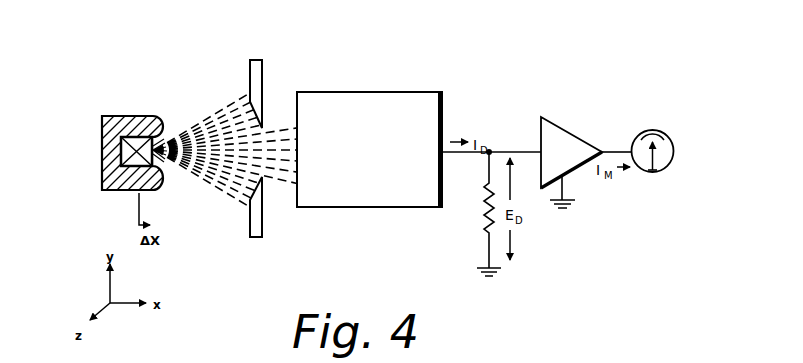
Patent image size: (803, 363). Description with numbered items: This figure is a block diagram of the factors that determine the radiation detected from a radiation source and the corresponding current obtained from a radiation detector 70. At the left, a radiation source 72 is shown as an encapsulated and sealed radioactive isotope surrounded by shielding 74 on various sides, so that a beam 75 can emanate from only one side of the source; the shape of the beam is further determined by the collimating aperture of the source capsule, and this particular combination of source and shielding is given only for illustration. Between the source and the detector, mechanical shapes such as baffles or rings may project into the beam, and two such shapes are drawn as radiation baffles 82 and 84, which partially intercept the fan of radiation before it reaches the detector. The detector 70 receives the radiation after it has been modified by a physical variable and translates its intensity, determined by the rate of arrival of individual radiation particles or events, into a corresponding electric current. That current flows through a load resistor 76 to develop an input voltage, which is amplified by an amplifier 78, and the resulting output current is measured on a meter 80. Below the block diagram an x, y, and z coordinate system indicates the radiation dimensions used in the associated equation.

The radiation detector 70 is at (380, 92).
The radiation source 72 is at (131, 137).
The shielding 74 is at (103, 160).
The beam 75 is at (205, 114).
The load resistor 76 is at (487, 234).
The amplifier 78 is at (568, 132).
The meter 80 is at (654, 172).
The radiation baffle 82 is at (262, 68).
The radiation baffle 84 is at (262, 229).